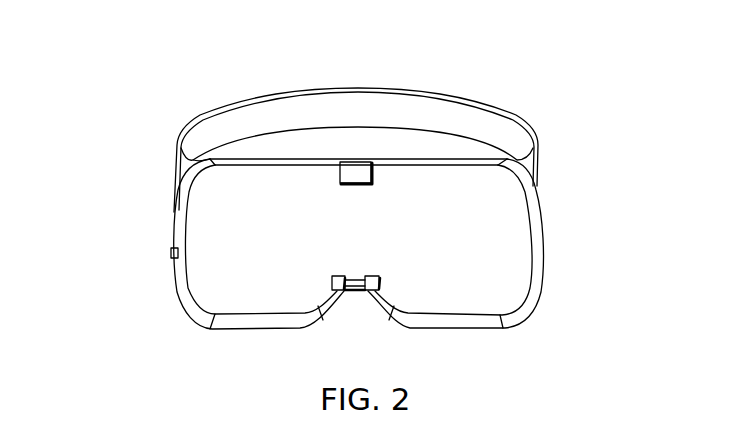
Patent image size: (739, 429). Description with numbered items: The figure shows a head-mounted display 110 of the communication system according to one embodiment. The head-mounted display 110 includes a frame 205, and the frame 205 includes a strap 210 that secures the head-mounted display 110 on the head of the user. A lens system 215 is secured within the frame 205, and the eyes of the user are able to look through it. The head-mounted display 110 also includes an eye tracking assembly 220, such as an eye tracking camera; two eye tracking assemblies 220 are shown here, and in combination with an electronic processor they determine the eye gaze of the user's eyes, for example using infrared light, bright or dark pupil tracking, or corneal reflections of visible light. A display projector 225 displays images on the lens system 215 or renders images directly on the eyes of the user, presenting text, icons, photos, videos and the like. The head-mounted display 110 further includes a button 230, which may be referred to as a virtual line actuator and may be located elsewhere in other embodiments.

The head-mounted display 110 is at (118, 86).
The frame 205 is at (192, 308).
The strap 210 is at (290, 93).
The lens system 215 is at (513, 235).
The eye tracking assembly 220 is at (331, 283).
The display projector 225 is at (362, 186).
The button 230 is at (170, 251).